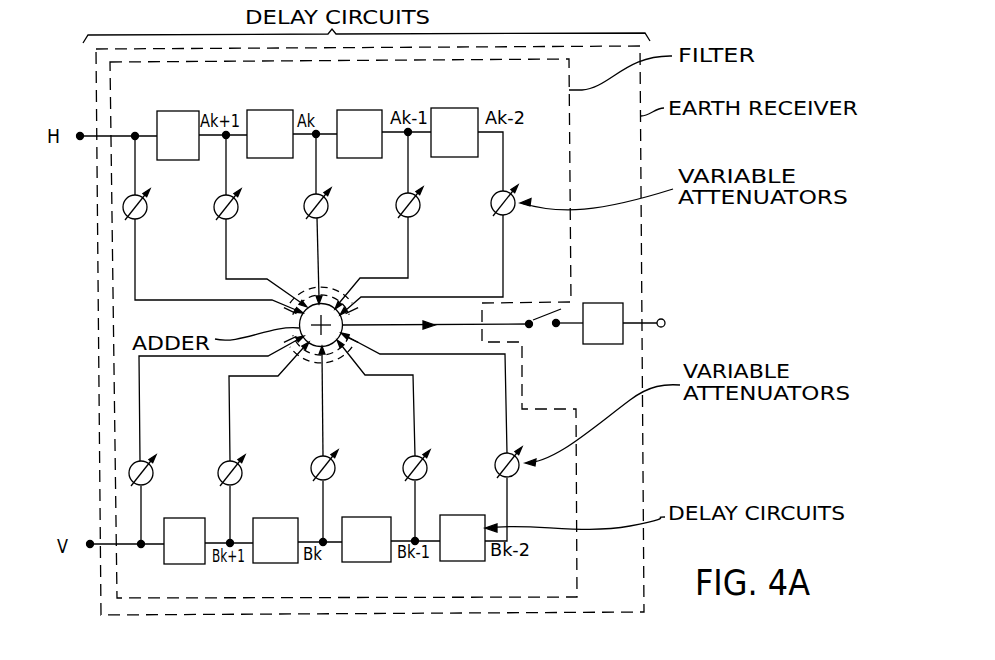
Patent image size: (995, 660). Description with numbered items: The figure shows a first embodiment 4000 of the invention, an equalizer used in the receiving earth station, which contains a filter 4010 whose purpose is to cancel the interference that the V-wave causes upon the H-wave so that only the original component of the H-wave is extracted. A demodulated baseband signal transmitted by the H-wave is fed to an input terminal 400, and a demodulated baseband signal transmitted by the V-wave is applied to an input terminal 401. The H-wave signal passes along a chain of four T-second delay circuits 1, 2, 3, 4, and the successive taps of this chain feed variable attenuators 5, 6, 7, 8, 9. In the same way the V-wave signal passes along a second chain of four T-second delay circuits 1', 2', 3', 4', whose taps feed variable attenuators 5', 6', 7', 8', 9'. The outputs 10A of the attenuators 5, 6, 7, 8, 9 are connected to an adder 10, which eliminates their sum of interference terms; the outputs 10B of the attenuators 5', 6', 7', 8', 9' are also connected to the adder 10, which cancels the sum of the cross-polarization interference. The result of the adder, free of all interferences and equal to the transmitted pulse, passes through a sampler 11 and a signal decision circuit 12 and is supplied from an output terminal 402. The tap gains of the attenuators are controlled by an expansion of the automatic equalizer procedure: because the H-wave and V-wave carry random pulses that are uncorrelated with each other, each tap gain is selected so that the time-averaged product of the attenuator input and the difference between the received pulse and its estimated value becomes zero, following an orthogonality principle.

The T-second delay circuit 1 is at (177, 120).
The T-second delay circuit 2 is at (270, 118).
The T-second delay circuit 3 is at (359, 118).
The T-second delay circuit 4 is at (454, 117).
The variable attenuator 5 is at (149, 205).
The variable attenuator 6 is at (238, 205).
The variable attenuator 7 is at (334, 205).
The variable attenuator 8 is at (423, 204).
The variable attenuator 9 is at (515, 216).
The adder 10 is at (299, 320).
The outputs of attenuators 5-9 10A is at (304, 284).
The outputs of attenuators 5'-9' 10B is at (305, 373).
The sampler 11 is at (545, 332).
The signal decision circuit 12 is at (600, 303).
The input terminal 400 is at (78, 141).
The input terminal 401 is at (88, 552).
The output terminal 402 is at (663, 318).
The embodiment 4000 is at (193, 616).
The filter 4010 is at (571, 192).
The T-second delay circuit 1' is at (184, 556).
The T-second delay circuit 2' is at (275, 556).
The T-second delay circuit 3' is at (368, 556).
The T-second delay circuit 4' is at (473, 555).
The variable attenuator 5' is at (159, 458).
The variable attenuator 6' is at (250, 460).
The variable attenuator 7' is at (343, 456).
The variable attenuator 8' is at (433, 456).
The variable attenuator 9' is at (516, 475).